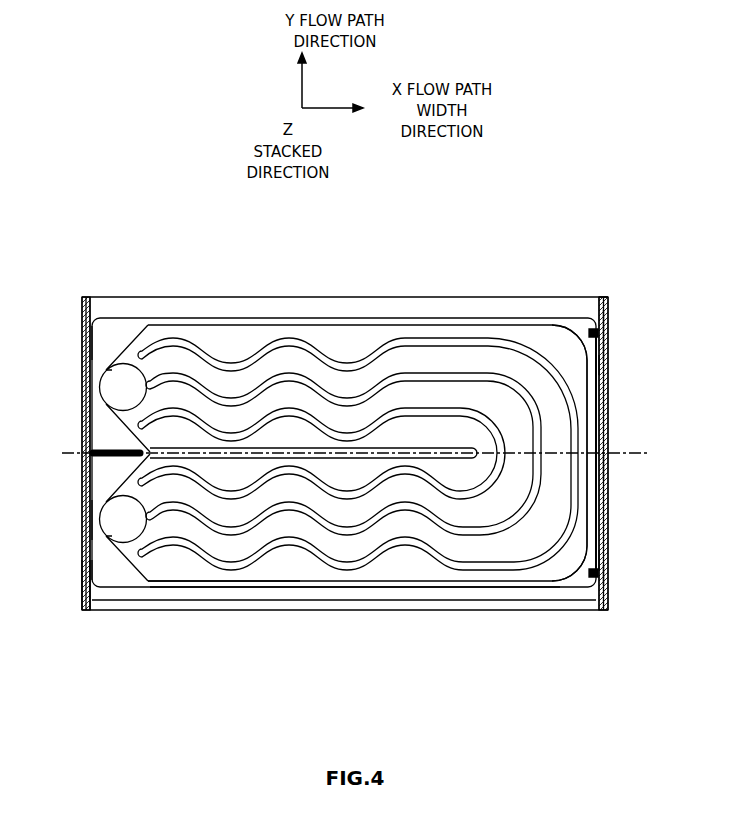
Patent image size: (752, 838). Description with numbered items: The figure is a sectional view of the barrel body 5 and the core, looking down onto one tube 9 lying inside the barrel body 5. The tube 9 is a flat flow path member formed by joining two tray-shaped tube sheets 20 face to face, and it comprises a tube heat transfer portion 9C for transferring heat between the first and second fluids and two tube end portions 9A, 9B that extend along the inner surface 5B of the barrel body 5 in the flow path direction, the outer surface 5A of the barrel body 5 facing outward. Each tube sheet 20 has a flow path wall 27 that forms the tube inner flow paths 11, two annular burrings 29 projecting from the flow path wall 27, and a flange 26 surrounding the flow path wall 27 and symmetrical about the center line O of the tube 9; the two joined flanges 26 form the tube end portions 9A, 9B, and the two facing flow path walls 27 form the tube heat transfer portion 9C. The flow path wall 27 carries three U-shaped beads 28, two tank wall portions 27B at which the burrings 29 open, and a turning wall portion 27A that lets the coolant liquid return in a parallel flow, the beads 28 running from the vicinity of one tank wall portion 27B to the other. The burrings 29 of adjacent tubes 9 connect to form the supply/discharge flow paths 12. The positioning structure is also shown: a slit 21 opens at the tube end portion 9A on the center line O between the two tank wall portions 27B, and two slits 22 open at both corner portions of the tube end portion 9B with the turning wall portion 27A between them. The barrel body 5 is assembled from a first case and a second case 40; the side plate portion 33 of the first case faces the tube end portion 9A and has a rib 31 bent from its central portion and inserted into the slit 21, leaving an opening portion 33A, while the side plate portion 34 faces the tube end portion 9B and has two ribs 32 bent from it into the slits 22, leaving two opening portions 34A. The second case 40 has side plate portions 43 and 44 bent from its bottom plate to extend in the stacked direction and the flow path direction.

The barrel body 5 is at (592, 297).
The outer surface of the barrel body 5A is at (83, 605).
The inner surface of the barrel body 5B is at (89, 592).
The tube 9 is at (252, 598).
The tube end portion 9A is at (92, 572).
The tube end portion 9B is at (594, 484).
The tube heat transfer portion 9C is at (305, 582).
The tube inner flow path 11 is at (238, 345).
The supply/discharge flow path 12 is at (110, 360).
The tube sheet 20 is at (163, 318).
The slit 21 is at (96, 449).
The slit 22 is at (600, 333).
The flange 26 is at (420, 335).
The flow path wall 27 is at (190, 572).
The turning wall portion 27A is at (556, 345).
The tank wall portion 27B is at (126, 420).
The bead 28 is at (310, 340).
The burring 29 is at (112, 376).
The rib 31 is at (100, 458).
The rib 32 is at (604, 345).
The side plate portion 33 is at (92, 332).
The opening portion 33A is at (92, 522).
The side plate portion 34 is at (604, 320).
The opening portion 34A is at (605, 365).
The second case 40 is at (85, 297).
The side plate portion 43 is at (88, 305).
The side plate portion 44 is at (608, 300).
The center line O is at (356, 434).